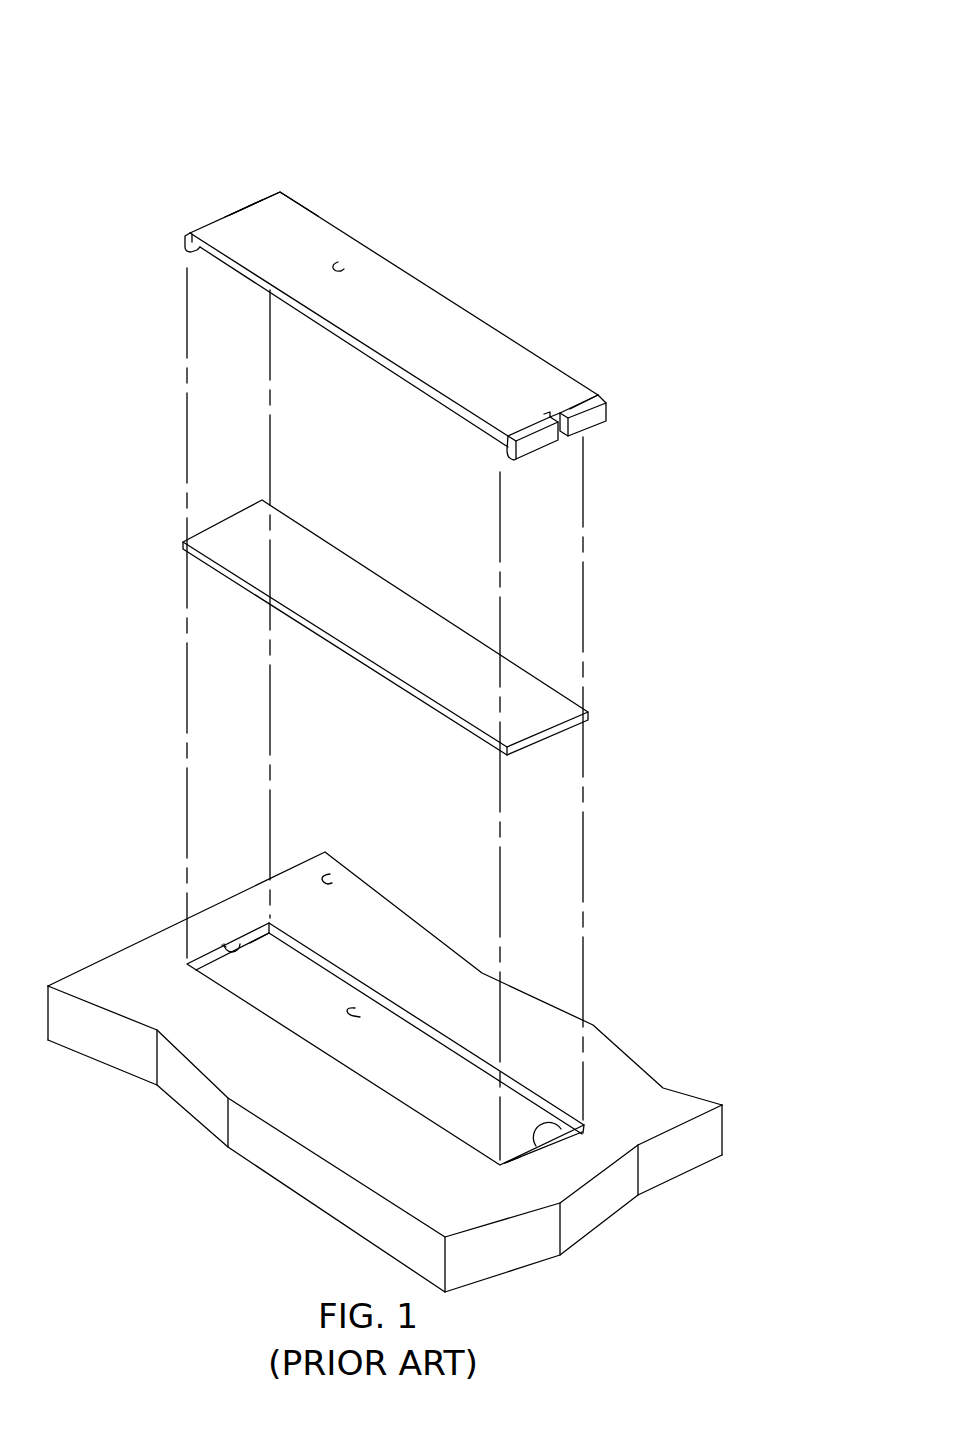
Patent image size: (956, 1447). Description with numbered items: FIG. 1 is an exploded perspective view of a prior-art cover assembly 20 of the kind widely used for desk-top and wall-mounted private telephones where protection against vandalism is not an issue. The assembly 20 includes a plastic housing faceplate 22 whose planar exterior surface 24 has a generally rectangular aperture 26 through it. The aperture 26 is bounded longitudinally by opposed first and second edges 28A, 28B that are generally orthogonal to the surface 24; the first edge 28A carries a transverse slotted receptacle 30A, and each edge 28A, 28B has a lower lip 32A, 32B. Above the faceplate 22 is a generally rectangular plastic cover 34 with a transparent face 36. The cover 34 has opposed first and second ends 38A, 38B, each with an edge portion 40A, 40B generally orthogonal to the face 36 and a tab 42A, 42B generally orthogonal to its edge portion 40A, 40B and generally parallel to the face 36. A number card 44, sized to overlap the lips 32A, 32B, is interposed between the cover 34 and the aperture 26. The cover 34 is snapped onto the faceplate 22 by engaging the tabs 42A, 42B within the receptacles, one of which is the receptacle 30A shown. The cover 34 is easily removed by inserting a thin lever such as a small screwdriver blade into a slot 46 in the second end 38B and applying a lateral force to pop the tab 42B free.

The cover assembly 20 is at (110, 108).
The housing faceplate 22 is at (145, 937).
The planar exterior surface 24 is at (330, 874).
The aperture 26 is at (355, 1008).
The first edge 28A is at (239, 944).
The second edge 28B is at (560, 1130).
The transverse slotted receptacle 30A is at (228, 950).
The lower lip 32A is at (262, 955).
The lower lip 32B is at (508, 1153).
The cover 34 is at (418, 275).
The transparent face 36 is at (338, 262).
The first end 38A is at (263, 193).
The second end 38B is at (606, 410).
The edge portion 40A is at (243, 207).
The edge portion 40B is at (600, 402).
The tab 42A is at (190, 233).
The tab 42B is at (518, 462).
The number card 44 is at (351, 556).
The slot 46 is at (549, 411).